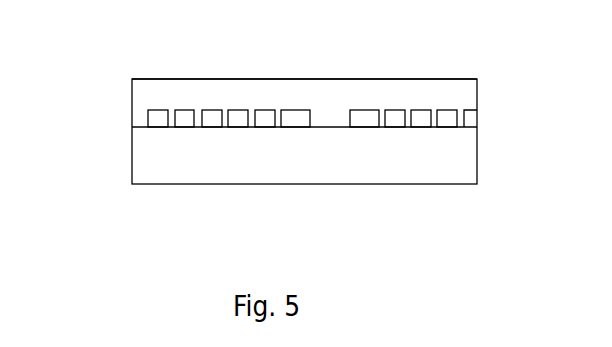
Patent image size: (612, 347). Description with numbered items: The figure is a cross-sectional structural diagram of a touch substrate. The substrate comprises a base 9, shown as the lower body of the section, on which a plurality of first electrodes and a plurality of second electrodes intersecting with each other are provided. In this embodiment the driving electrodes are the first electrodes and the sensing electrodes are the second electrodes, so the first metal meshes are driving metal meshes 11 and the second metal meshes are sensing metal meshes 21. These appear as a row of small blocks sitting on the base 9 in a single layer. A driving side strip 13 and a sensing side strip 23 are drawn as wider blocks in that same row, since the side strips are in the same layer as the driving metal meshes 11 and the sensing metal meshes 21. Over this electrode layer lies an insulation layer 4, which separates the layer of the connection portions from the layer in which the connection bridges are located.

The insulation layer 4 is at (238, 92).
The base 9 is at (158, 163).
The driving metal meshes 11 is at (449, 120).
The driving side strip 13 is at (367, 120).
The sensing metal meshes 21 is at (216, 118).
The sensing side strip 23 is at (296, 120).